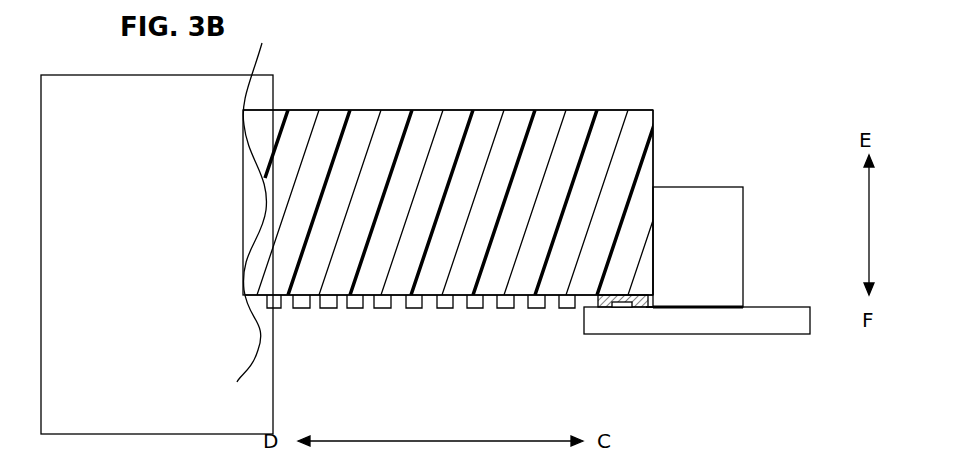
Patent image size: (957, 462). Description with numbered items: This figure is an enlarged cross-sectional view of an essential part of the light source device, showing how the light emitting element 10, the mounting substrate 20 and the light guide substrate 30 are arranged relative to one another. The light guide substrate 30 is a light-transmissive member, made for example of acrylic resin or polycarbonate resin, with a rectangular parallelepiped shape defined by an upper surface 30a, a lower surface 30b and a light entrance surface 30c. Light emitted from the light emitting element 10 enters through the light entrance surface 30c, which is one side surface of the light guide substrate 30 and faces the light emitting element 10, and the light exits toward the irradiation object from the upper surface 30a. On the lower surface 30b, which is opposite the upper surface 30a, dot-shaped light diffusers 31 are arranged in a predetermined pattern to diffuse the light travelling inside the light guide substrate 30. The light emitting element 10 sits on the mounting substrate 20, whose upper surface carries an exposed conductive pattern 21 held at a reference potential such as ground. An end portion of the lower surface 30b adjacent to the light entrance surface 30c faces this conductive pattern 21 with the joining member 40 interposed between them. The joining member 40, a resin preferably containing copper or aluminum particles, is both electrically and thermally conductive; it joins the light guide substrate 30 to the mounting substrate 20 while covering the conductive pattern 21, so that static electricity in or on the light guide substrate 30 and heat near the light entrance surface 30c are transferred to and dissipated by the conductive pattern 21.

The light emitting element 10 is at (715, 243).
The mounting substrate 20 is at (728, 310).
The conductive pattern 21 is at (620, 304).
The light guide substrate 30 is at (303, 296).
The upper surface 30a is at (495, 110).
The lower surface 30b is at (493, 296).
The light entrance surface 30c is at (653, 166).
The light diffusers 31 is at (414, 300).
The joining member 40 is at (648, 308).